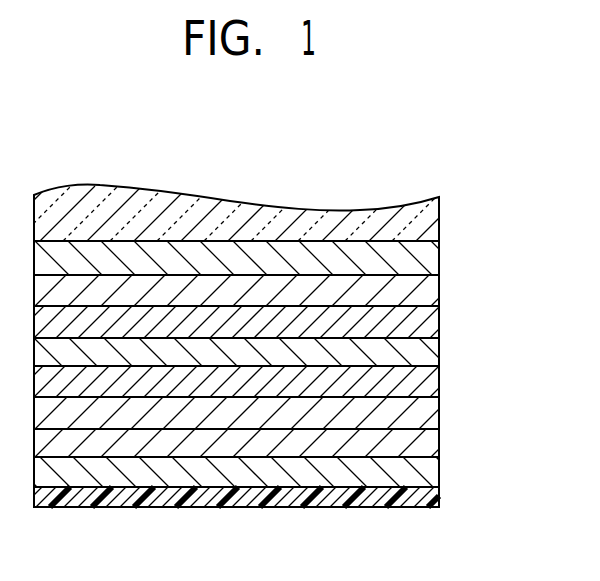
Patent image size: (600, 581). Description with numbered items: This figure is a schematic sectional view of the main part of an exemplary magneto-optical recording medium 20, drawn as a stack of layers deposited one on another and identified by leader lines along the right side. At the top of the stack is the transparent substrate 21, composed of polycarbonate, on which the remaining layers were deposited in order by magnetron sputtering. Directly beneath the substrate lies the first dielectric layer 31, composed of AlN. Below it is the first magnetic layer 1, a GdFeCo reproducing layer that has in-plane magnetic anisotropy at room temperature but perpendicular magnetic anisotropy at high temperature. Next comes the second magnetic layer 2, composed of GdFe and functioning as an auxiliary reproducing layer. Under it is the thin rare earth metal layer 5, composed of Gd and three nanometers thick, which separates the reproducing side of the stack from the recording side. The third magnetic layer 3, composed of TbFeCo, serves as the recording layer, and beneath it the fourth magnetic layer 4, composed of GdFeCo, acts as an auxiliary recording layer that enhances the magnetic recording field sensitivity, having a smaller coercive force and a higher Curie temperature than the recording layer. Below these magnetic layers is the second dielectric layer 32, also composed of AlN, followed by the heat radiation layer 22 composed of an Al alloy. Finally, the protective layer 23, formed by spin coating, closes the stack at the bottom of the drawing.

The laminated structure 20 is at (375, 180).
The transparent substrate 21 is at (428, 229).
The first dielectric layer 31 is at (428, 262).
The first magnetic layer 1 is at (430, 293).
The second magnetic layer 2 is at (428, 326).
The rare earth metal layer 5 is at (428, 355).
The third magnetic layer 3 is at (432, 388).
The fourth magnetic layer 4 is at (428, 412).
The second dielectric layer 32 is at (428, 443).
The heat radiation layer 22 is at (428, 475).
The protective layer 23 is at (438, 503).